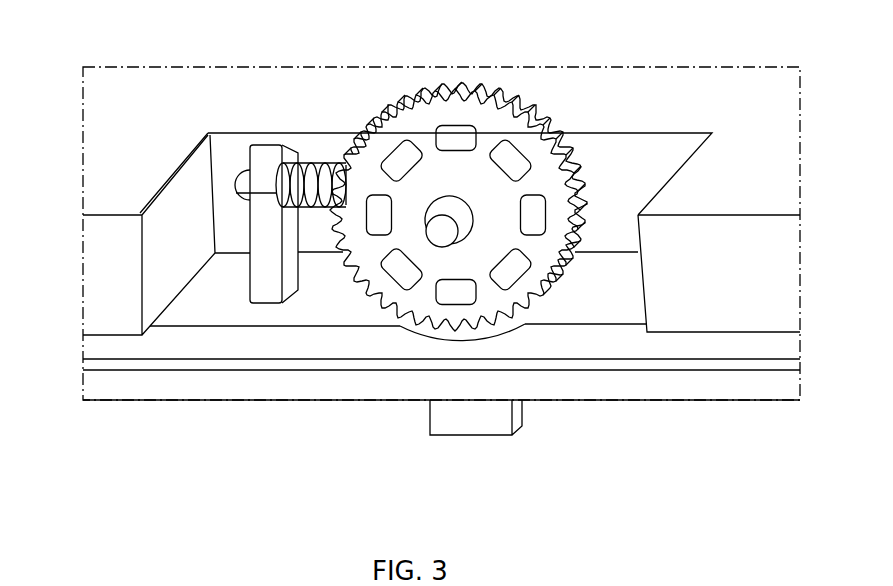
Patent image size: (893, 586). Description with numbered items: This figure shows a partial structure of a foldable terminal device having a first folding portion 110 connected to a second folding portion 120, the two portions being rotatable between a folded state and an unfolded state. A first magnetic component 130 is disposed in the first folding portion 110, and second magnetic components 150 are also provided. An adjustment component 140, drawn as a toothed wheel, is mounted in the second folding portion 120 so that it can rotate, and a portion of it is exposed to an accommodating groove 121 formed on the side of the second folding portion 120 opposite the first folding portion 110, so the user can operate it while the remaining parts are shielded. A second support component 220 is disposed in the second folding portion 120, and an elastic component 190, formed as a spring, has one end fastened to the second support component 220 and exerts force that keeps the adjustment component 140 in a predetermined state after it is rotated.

The first folding portion 110 is at (288, 383).
The second folding portion 120 is at (132, 133).
The accommodating groove 121 is at (190, 187).
The first magnetic component 130 is at (488, 420).
The adjustment component 140 is at (476, 230).
The second magnetic components 150 is at (472, 292).
The elastic component 190 is at (318, 163).
The second support component 220 is at (263, 163).